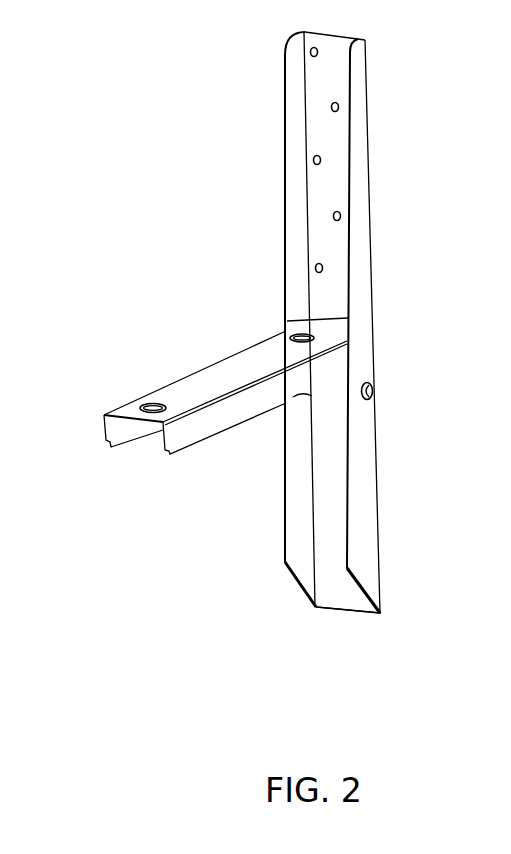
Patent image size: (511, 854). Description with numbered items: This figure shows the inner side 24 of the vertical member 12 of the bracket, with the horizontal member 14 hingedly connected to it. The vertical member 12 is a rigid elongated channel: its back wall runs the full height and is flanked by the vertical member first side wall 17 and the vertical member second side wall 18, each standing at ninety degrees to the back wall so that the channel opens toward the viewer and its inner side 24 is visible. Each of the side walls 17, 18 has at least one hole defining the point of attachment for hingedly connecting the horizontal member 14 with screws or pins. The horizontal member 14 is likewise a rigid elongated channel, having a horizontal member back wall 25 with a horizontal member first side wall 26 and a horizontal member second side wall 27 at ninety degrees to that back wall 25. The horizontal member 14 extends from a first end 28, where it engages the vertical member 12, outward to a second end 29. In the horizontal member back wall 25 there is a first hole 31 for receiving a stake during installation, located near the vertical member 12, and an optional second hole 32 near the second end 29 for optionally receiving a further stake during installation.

The vertical member 12 is at (331, 355).
The horizontal member 14 is at (191, 385).
The vertical member first side wall 17 is at (264, 319).
The vertical member second side wall 18 is at (398, 324).
The inner side 24 is at (319, 620).
The horizontal member back wall 25 is at (223, 434).
The horizontal member first side wall 26 is at (128, 451).
The horizontal member second side wall 27 is at (225, 409).
The first end 28 is at (397, 332).
The second end 29 is at (99, 392).
The first hole 31 is at (262, 312).
The second hole 32 is at (105, 362).